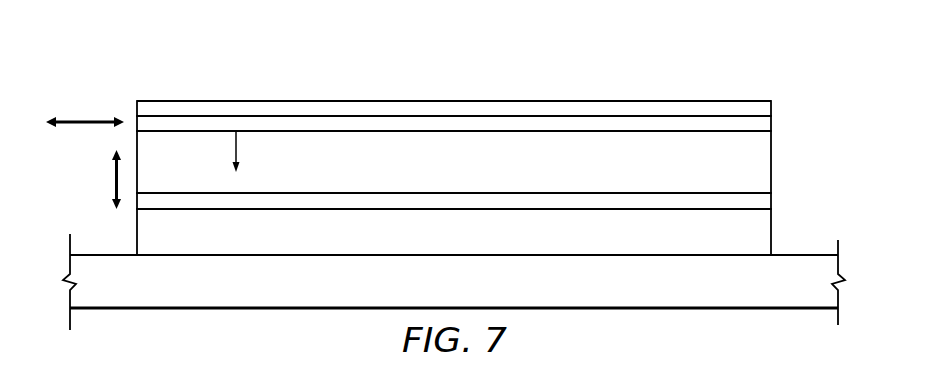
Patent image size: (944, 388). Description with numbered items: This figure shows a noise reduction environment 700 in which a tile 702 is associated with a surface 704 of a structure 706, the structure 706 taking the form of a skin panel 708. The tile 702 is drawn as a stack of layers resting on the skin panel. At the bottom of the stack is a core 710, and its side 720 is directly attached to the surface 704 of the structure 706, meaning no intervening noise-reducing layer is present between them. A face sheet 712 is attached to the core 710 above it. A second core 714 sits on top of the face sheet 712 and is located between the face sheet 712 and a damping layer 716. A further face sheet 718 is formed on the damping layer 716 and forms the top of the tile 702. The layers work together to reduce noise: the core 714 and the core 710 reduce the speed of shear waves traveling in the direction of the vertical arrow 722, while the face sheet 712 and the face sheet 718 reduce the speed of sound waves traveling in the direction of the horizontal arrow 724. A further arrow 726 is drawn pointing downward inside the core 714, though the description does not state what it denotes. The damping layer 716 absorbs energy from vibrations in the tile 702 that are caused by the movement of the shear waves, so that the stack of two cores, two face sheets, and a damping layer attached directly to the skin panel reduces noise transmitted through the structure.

The noise reduction environment 700 is at (306, 66).
The tile 702 is at (452, 100).
The surface 704 is at (800, 255).
The structure 706 is at (472, 294).
The skin panel 708 is at (555, 294).
The core 710 is at (472, 246).
The face sheet 712 is at (771, 202).
The core 714 is at (472, 175).
The damping layer 716 is at (771, 124).
The face sheet 718 is at (771, 103).
The side 720 is at (288, 256).
The arrow 722 is at (113, 178).
The arrow 724 is at (83, 121).
The pressing direction 726 is at (237, 148).